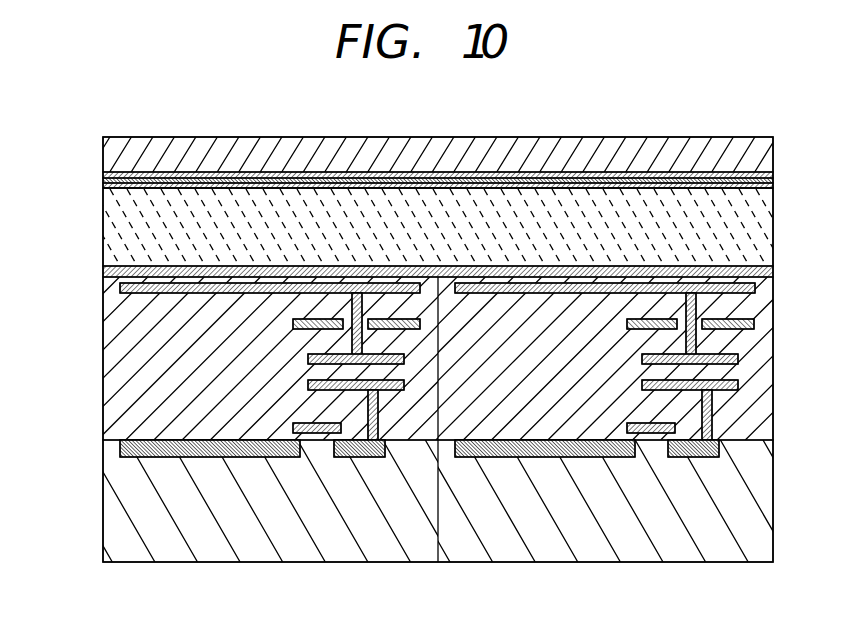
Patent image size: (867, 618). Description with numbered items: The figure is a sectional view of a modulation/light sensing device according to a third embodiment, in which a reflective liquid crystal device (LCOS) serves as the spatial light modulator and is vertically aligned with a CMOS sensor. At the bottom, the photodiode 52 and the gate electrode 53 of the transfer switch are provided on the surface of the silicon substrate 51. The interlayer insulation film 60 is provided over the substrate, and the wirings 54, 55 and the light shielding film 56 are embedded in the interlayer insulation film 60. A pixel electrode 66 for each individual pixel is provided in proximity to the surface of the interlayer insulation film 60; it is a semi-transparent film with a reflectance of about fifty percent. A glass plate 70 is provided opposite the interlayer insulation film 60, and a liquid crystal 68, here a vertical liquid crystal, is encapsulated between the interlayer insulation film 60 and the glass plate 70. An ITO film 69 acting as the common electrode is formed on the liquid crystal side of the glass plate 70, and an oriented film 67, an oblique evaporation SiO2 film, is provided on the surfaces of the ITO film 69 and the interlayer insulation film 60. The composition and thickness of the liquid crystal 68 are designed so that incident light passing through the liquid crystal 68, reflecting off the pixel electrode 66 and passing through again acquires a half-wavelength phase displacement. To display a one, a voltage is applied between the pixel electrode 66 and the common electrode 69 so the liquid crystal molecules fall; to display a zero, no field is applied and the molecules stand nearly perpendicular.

The silicon substrate 51 is at (127, 505).
The photodiode 52 is at (195, 452).
The gate electrode 53 is at (300, 424).
The wiring 54 is at (288, 310).
The wiring 55 is at (405, 359).
The light shielding film 56 is at (420, 323).
The interlayer insulation film 60 is at (127, 402).
The pixel electrode 66 is at (160, 295).
The oriented film 67 is at (110, 188).
The liquid crystal 68 is at (112, 230).
The ITO film 69 is at (155, 176).
The glass plate 70 is at (243, 148).